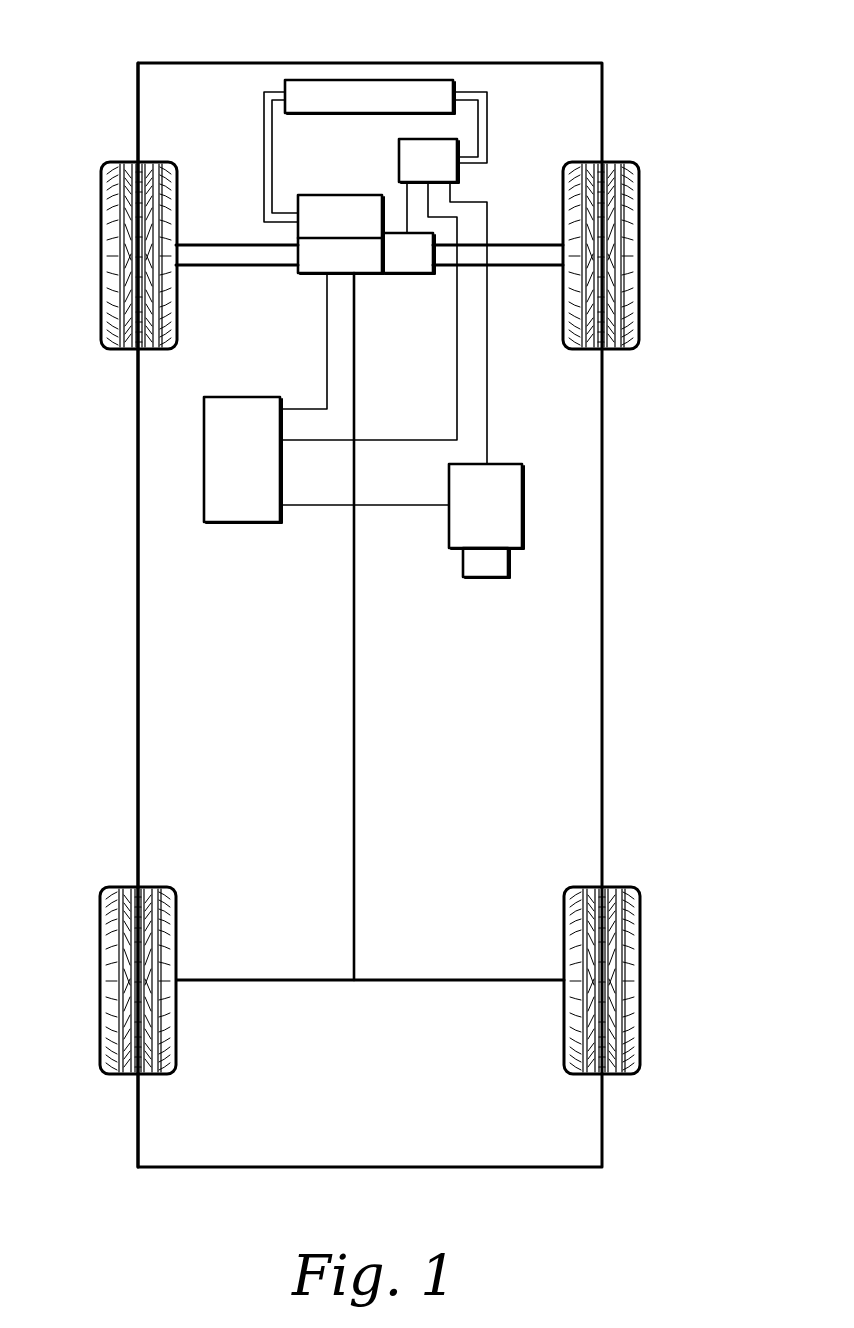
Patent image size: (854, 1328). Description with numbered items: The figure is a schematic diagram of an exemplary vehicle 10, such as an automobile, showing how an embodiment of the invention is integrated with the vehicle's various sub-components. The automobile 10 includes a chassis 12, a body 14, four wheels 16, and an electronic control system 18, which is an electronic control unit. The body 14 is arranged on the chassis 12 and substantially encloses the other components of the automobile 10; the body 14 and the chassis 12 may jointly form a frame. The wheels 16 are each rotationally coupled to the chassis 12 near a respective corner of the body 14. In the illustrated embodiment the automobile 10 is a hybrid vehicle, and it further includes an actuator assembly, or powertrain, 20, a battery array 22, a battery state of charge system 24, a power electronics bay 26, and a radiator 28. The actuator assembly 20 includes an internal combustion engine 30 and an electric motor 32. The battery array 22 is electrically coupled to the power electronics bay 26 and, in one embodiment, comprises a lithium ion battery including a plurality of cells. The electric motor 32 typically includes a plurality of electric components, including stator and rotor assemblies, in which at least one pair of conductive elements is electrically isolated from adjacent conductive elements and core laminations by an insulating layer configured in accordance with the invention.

The vehicle 10 is at (640, 70).
The chassis 12 is at (355, 823).
The body 14 is at (137, 462).
The wheels 16 is at (106, 236).
The electronic control system 18 is at (243, 460).
The actuator assembly 20 is at (387, 287).
The battery array 22 is at (486, 506).
The battery state of charge system 24 is at (503, 567).
The power electronics bay 26 is at (429, 161).
The radiator 28 is at (332, 88).
The internal combustion engine 30 is at (341, 234).
The electric motor 32 is at (409, 253).